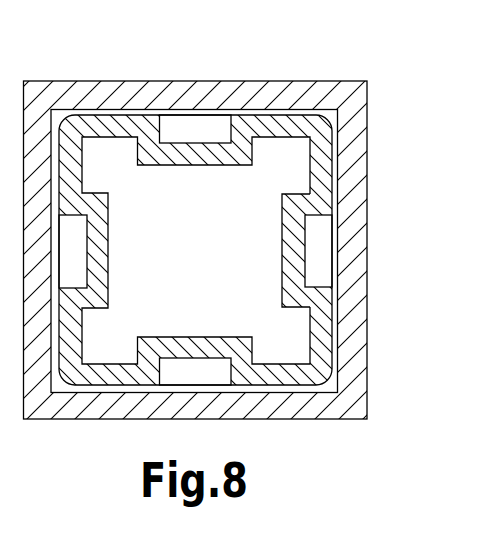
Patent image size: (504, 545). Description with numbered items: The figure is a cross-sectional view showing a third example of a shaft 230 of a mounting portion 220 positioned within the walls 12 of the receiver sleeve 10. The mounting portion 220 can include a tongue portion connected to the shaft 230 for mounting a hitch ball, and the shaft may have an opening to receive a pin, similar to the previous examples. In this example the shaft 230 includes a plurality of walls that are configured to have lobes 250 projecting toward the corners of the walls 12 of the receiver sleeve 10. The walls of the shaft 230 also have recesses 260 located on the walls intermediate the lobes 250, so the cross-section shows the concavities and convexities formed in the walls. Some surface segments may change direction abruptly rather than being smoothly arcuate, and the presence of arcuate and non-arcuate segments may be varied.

The receiver sleeve 10 is at (252, 233).
The walls 12 is at (357, 197).
The lobes 250 is at (252, 218).
The recesses 260 is at (197, 132).
The mounting portion 220 is at (337, 267).
The shaft 230 is at (318, 332).